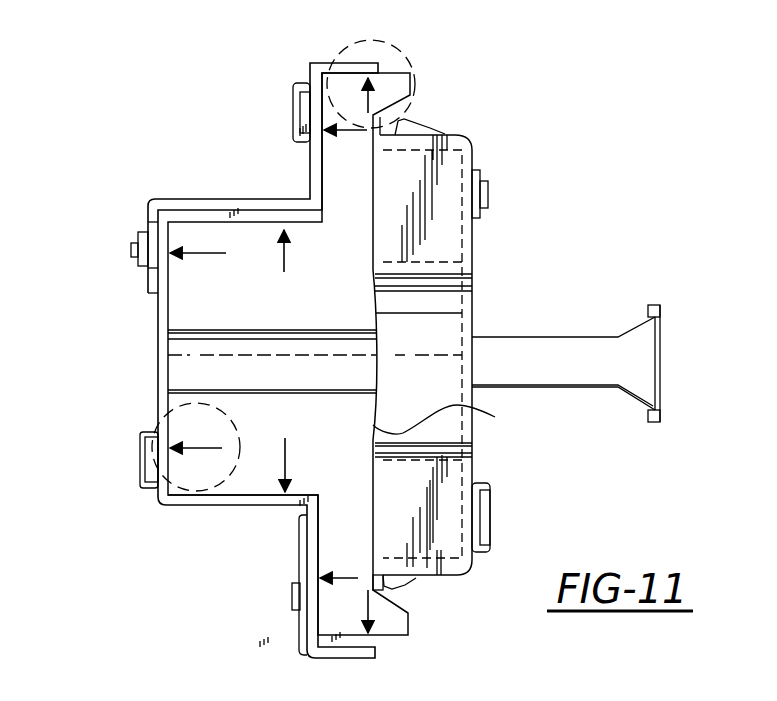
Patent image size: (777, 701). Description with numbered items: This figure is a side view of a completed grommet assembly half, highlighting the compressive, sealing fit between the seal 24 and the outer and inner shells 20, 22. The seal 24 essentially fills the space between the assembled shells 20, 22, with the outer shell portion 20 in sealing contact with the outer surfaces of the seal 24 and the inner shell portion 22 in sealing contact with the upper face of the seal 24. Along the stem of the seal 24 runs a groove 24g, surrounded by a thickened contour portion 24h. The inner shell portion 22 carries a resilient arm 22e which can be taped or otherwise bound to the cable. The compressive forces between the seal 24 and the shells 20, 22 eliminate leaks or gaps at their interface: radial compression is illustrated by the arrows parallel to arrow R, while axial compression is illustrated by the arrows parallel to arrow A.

The outer shell portion 20 is at (270, 508).
The inner shell portion 22 is at (475, 253).
The resilient arm 22e is at (575, 353).
The seal 24 is at (210, 222).
The groove 24g is at (183, 351).
The thickened contour portion 24h is at (495, 417).
The arrow R is at (414, 68).
The arrow A is at (225, 502).